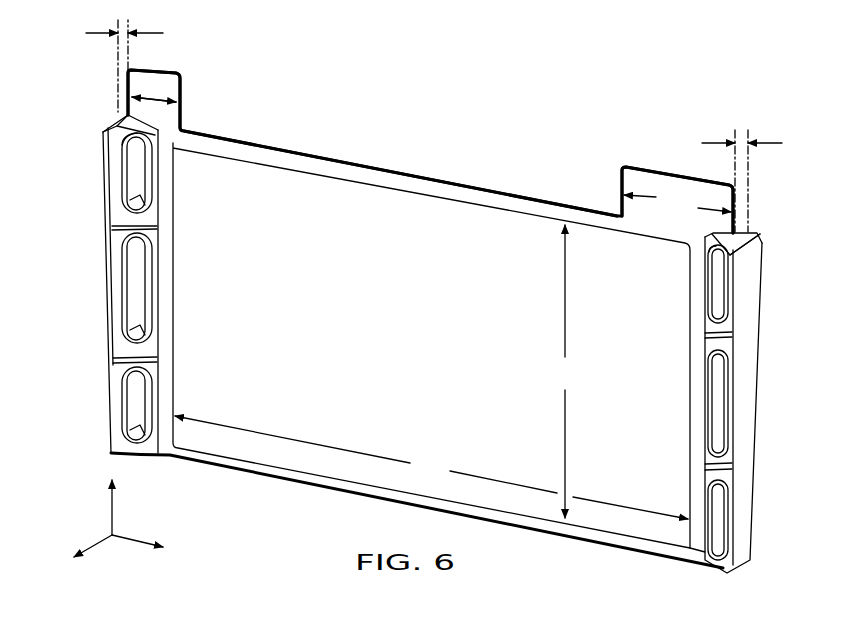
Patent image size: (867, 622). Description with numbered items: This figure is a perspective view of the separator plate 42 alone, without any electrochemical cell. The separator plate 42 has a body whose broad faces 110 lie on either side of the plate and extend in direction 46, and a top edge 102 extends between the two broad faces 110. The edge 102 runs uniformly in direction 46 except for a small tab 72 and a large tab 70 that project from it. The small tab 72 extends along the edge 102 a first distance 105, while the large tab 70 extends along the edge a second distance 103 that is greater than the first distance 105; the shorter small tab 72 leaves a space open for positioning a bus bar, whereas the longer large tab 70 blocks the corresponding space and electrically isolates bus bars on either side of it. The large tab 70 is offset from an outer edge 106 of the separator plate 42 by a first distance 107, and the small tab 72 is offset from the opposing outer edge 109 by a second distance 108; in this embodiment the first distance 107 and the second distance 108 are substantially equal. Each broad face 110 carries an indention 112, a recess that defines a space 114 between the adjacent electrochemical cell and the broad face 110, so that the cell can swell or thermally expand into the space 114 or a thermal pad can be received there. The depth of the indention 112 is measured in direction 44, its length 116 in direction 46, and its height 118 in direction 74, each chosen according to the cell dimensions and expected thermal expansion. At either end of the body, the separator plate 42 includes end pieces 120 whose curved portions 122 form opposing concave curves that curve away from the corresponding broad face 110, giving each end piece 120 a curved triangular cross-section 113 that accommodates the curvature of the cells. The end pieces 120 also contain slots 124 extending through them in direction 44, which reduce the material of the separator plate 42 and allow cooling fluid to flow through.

The separator plate 42 is at (462, 163).
The direction 44 is at (97, 545).
The direction 46 is at (134, 540).
The large tab 70 is at (650, 180).
The small tab 72 is at (145, 80).
The direction 74 is at (111, 512).
The edge 102 is at (292, 148).
The second distance 103 is at (677, 205).
The first distance 105 is at (156, 100).
The outer edge 106 is at (752, 302).
The first distance 107 is at (722, 142).
The second distance 108 is at (103, 32).
The opposing outer edge 109 is at (108, 193).
The broad face 110 is at (165, 143).
The indention 112 is at (325, 200).
The curved triangular cross-section 113 is at (119, 118).
The space 114 is at (387, 226).
The length 116 is at (431, 467).
The height 118 is at (563, 371).
The end piece 120 is at (117, 110).
The curved portion 122 is at (148, 133).
The slot 124 is at (146, 186).